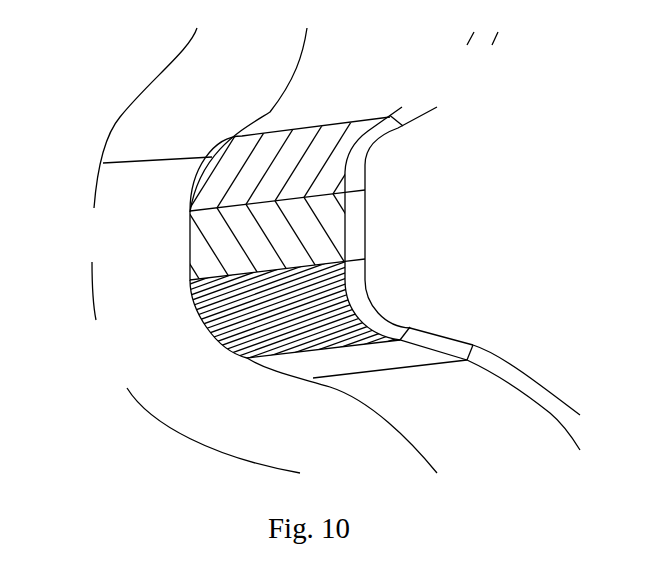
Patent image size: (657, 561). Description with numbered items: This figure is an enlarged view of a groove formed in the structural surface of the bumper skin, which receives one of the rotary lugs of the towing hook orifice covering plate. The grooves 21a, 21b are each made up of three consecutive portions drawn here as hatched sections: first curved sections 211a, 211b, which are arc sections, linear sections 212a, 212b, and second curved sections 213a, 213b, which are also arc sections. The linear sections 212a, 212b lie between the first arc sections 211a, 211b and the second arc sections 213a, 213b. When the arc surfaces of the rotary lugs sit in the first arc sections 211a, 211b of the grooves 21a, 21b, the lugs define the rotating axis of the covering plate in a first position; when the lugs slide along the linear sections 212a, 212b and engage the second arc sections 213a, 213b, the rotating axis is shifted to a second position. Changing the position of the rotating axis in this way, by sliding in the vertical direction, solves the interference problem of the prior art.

The groove 21a is at (121, 174).
The groove 21b is at (162, 95).
The first curved section 211a is at (310, 140).
The first curved section 211b is at (296, 158).
The linear section 212a is at (221, 260).
The linear section 212b is at (215, 248).
The second curved section 213a is at (241, 319).
The second curved section 213b is at (245, 310).